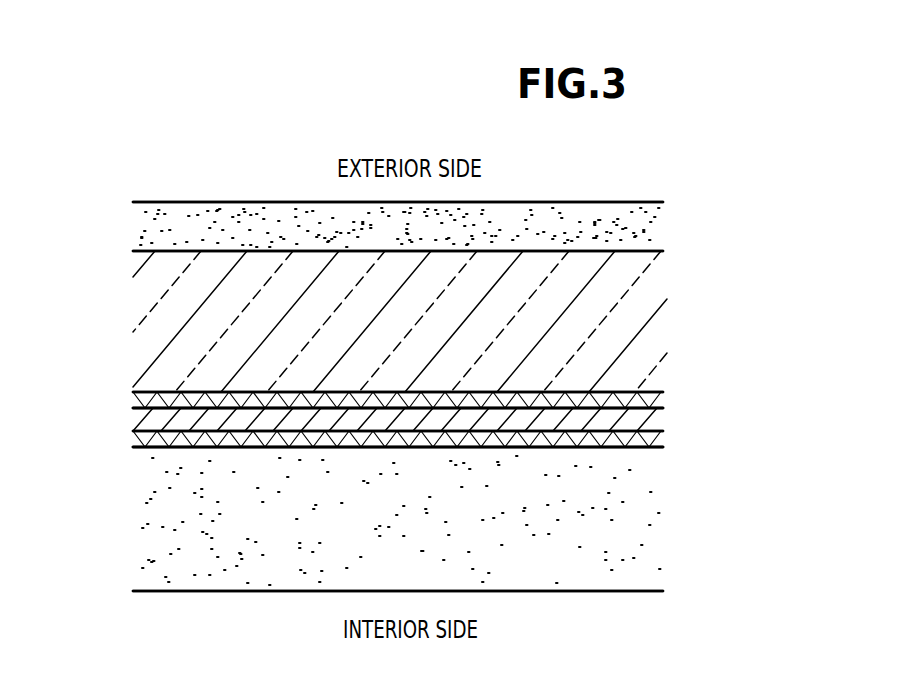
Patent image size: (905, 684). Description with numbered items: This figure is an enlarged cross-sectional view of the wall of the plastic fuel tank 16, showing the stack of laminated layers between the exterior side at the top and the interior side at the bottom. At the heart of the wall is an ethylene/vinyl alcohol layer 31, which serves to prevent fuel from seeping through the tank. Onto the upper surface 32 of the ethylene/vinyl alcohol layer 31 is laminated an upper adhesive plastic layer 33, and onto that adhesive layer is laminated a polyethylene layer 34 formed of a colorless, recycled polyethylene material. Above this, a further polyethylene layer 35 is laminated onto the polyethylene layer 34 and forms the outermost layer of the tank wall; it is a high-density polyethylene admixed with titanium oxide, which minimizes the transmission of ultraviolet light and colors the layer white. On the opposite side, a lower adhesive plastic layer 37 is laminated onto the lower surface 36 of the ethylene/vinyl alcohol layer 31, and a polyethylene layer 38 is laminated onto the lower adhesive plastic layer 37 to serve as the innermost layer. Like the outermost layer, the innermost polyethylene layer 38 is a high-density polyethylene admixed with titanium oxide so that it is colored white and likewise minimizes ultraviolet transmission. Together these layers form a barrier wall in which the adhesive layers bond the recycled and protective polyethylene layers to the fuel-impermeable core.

The plastic fuel tank 16 is at (133, 93).
The polyethylene layer 35 is at (655, 228).
The polyethylene layer 34 is at (655, 307).
The upper adhesive plastic layer 33 is at (647, 403).
The upper surface 32 is at (652, 400).
The ethylene/vinyl alcohol layer 31 is at (652, 420).
The lower surface 36 is at (652, 432).
The lower adhesive plastic layer 37 is at (652, 440).
The polyethylene layer 38 is at (640, 527).